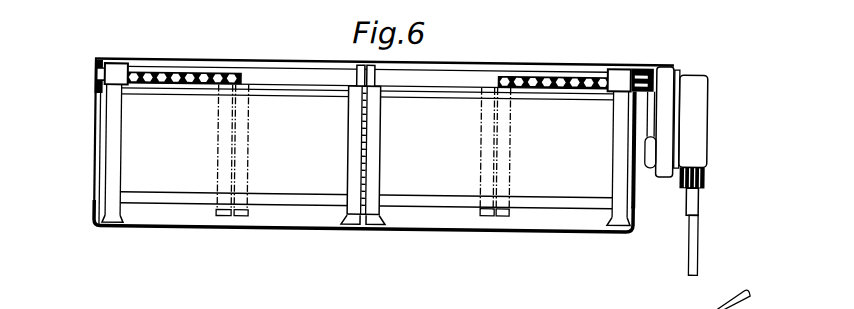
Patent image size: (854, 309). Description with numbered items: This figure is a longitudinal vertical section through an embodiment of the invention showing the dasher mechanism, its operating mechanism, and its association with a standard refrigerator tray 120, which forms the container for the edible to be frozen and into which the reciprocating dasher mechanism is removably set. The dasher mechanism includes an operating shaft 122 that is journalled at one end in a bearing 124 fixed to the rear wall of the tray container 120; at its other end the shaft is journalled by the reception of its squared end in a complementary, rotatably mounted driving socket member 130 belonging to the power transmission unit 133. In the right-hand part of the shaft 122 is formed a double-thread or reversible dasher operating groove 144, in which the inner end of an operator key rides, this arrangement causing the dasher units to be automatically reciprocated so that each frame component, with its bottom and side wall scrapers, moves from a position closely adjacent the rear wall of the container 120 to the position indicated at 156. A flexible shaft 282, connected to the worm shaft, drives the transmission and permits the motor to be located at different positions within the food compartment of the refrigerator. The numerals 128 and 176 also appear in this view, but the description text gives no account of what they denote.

The refrigerator tray 120 is at (419, 227).
The operating shaft 122 is at (300, 76).
The bearing 124 is at (93, 88).
The housing end wall 128 is at (99, 150).
The driving socket member 130 is at (633, 64).
The power transmission unit 133 is at (681, 80).
The reversible dasher operating groove 144 is at (188, 71).
The position of the frame component 156 is at (352, 130).
The right chain 176 is at (545, 72).
The flexible shaft 282 is at (700, 240).